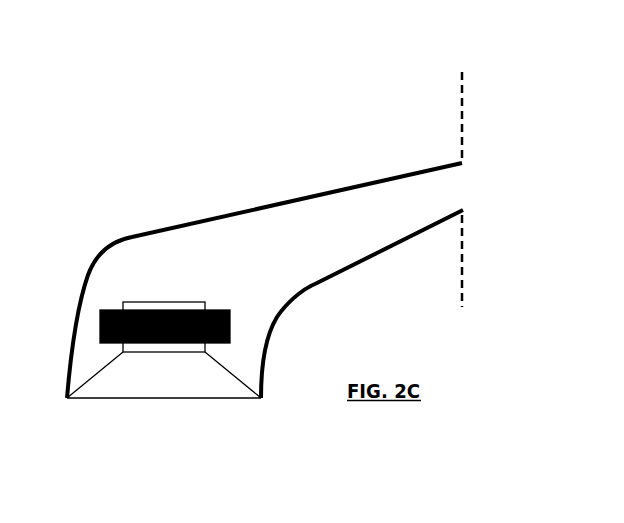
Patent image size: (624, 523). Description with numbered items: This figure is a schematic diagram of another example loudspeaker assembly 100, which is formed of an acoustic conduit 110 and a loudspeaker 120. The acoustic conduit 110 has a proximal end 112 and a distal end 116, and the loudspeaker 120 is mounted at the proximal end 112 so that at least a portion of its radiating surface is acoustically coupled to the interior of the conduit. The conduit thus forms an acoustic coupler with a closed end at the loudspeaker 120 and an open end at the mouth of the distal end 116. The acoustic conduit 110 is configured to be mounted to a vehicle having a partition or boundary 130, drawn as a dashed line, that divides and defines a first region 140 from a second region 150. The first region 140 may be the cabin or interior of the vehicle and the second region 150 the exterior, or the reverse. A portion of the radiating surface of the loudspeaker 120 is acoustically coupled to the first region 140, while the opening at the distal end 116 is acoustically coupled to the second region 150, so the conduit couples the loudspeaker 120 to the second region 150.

The loudspeaker assembly 100 is at (178, 125).
The acoustic conduit 110 is at (368, 265).
The proximal end 112 is at (63, 398).
The distal end 116 is at (0, 8).
The loudspeaker 120 is at (210, 302).
The partition or boundary 130 is at (462, 72).
The first region 140 is at (431, 124).
The second region 150 is at (504, 124).